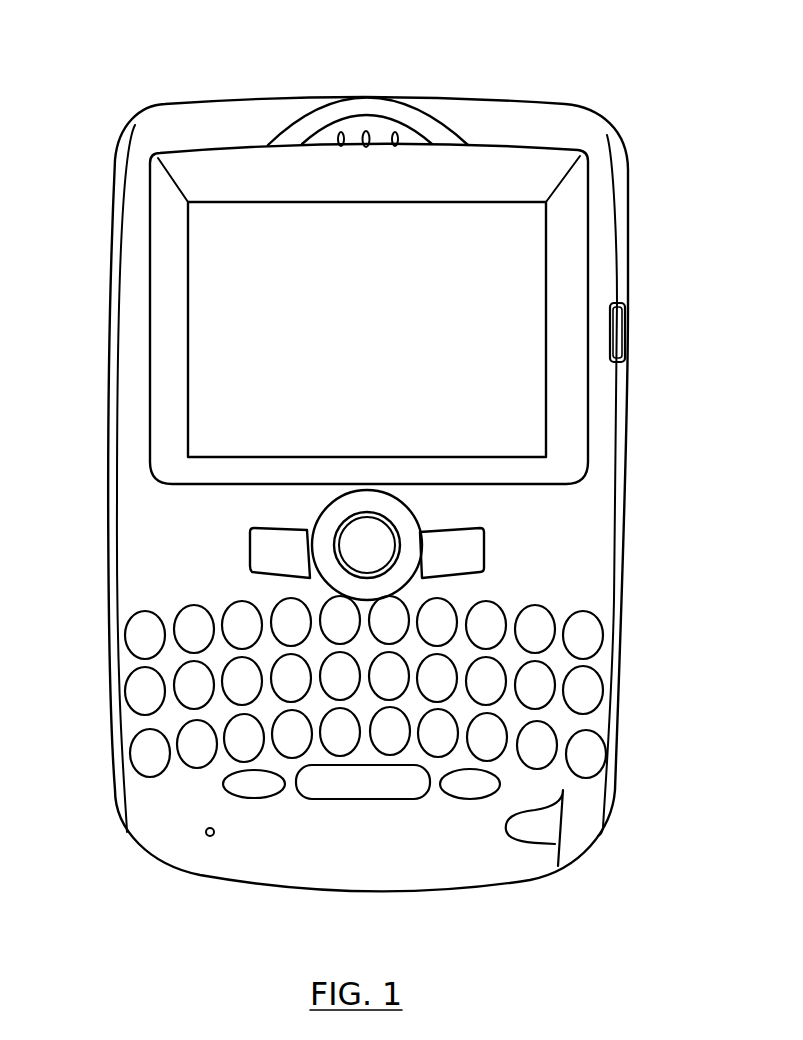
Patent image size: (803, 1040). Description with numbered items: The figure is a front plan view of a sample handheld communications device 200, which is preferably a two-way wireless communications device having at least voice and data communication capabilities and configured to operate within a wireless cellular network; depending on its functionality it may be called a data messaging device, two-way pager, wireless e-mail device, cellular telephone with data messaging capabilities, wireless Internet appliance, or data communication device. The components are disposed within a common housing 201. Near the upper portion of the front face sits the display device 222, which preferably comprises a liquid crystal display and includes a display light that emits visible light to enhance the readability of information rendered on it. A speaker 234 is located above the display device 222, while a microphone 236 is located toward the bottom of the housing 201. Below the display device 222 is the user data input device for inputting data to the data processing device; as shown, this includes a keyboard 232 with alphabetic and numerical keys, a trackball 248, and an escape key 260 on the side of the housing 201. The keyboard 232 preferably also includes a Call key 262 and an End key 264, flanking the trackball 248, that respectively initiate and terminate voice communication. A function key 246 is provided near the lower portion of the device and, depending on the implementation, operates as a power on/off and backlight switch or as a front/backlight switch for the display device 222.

The handheld communications device 200 is at (141, 66).
The housing 201 is at (236, 104).
The display device 222 is at (547, 420).
The keyboard 232 is at (661, 610).
The speaker 234 is at (366, 148).
The microphone 236 is at (210, 836).
The function key 246 is at (523, 845).
The trackball 248 is at (375, 545).
The escape key 260 is at (627, 327).
The Call key 262 is at (252, 551).
The End key 264 is at (480, 560).